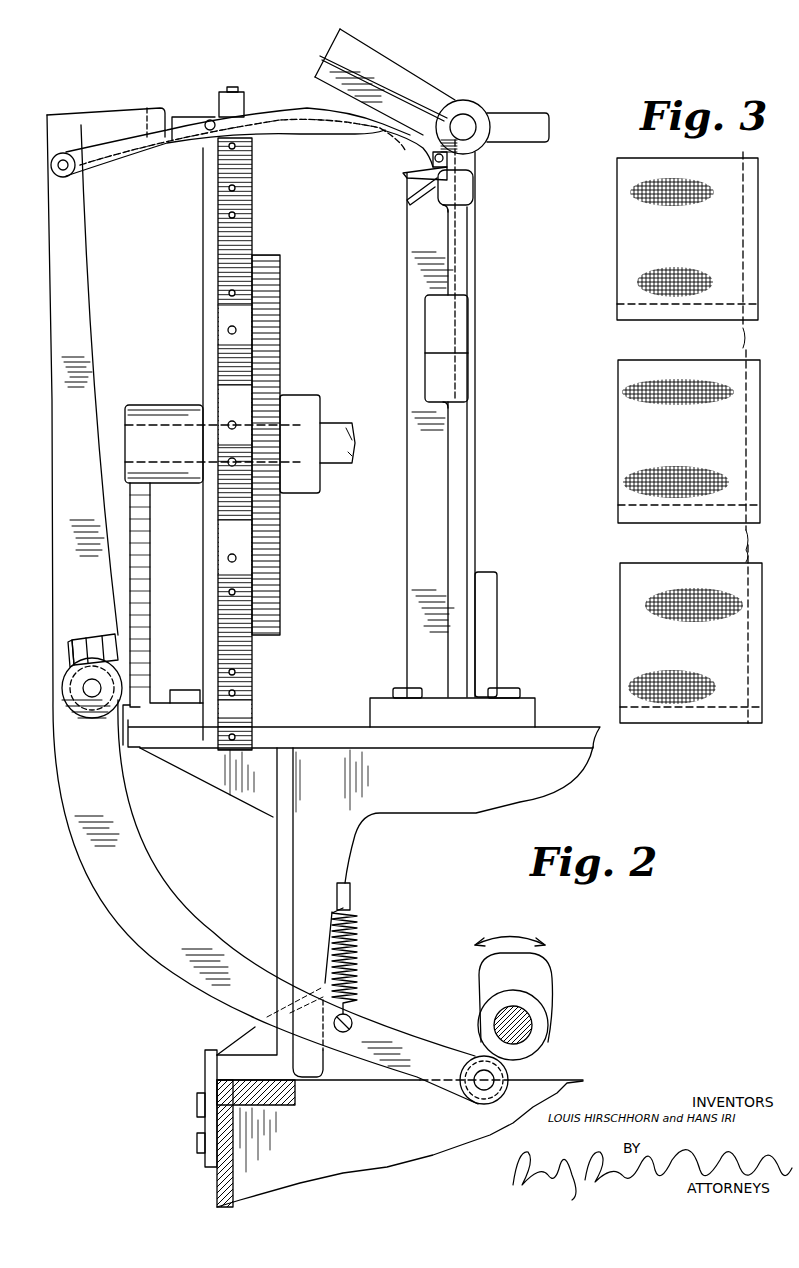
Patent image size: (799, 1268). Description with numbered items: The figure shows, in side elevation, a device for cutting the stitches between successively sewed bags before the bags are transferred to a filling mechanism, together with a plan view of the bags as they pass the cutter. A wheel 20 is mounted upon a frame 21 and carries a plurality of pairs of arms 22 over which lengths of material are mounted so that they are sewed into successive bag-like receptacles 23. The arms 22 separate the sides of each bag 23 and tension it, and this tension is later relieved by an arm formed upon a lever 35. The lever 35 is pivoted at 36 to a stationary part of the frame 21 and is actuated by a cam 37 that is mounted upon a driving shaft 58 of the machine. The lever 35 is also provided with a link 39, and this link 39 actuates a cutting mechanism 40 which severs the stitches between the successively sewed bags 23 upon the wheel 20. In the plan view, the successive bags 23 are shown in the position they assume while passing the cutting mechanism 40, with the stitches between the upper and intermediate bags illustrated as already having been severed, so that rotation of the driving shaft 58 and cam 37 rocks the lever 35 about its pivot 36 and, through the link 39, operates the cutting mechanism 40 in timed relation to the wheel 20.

In FIG. 2, the wheel 20 is at (232, 214).
In FIG. 2, the frame 21 is at (345, 832).
In FIG. 2, the pairs of arms 22 is at (300, 140).
In FIG. 3, the bag-like receptacle 23 is at (647, 245).
In FIG. 2, the lever 35 is at (73, 294).
In FIG. 2, the pivot 36 is at (94, 692).
In FIG. 2, the cam 37 is at (535, 982).
In FIG. 2, the link 39 is at (117, 145).
In FIG. 2, the cutting mechanism 40 is at (432, 193).
In FIG. 2, the driving shaft 58 is at (532, 1022).